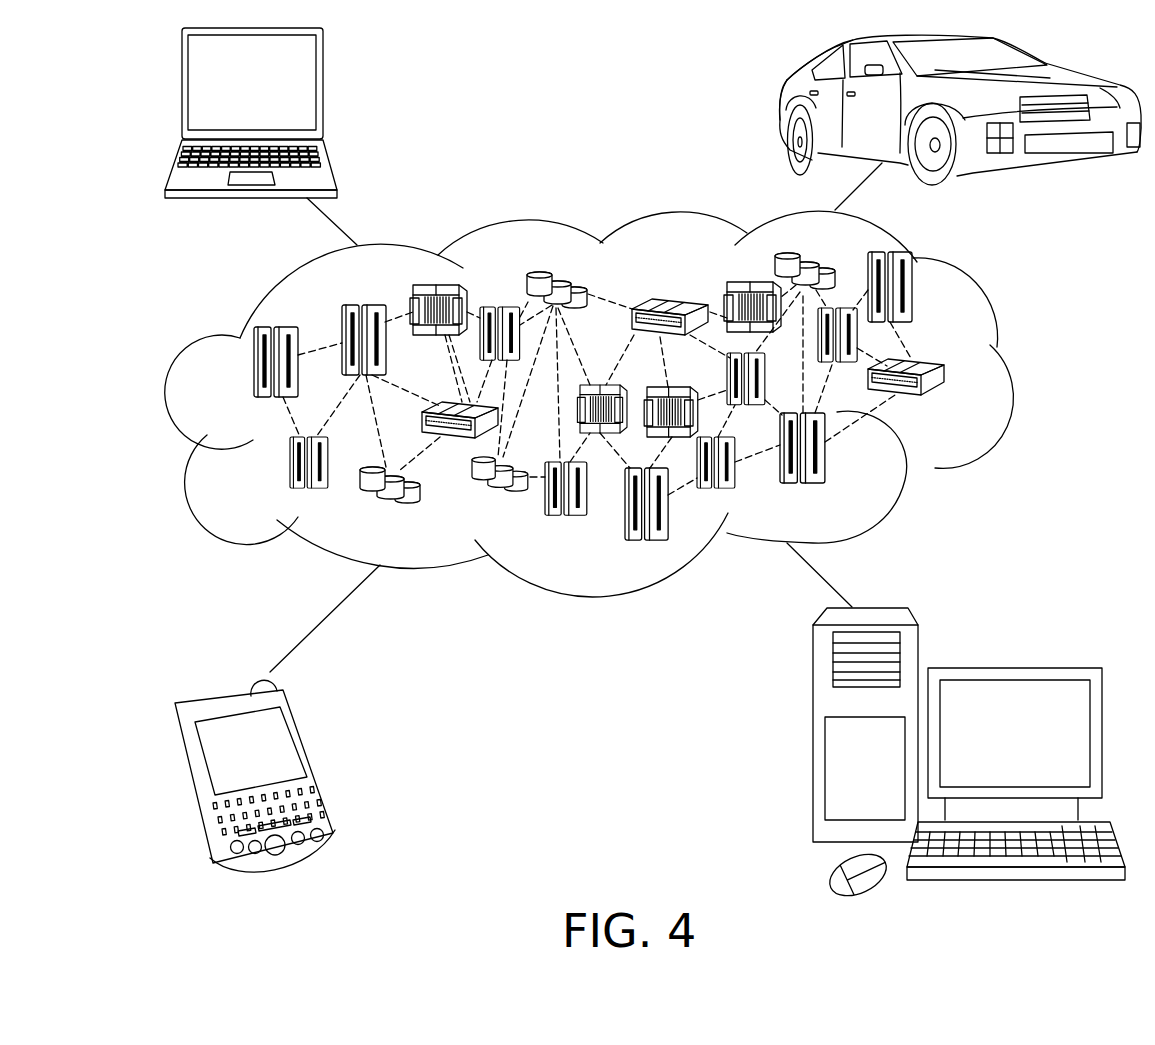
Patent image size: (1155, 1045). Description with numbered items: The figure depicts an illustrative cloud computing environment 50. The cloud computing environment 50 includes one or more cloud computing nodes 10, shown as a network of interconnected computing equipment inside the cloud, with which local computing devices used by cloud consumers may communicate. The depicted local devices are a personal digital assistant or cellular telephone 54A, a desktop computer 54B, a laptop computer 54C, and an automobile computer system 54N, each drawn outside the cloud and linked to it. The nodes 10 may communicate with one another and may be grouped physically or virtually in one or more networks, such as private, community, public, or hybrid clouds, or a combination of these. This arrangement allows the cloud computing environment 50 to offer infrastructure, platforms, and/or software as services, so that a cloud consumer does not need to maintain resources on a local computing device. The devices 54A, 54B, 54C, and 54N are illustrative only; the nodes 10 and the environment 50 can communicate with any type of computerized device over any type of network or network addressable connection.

The cloud computing node 10 is at (960, 408).
The cloud computing environment 50 is at (1013, 375).
The personal digital assistant or cellular telephone 54A is at (317, 765).
The desktop computer 54B is at (1013, 668).
The laptop computer 54C is at (326, 94).
The automobile computer system 54N is at (783, 111).